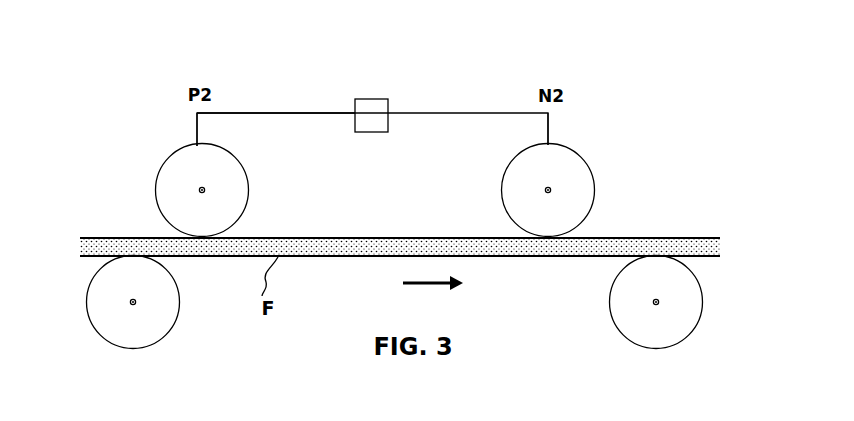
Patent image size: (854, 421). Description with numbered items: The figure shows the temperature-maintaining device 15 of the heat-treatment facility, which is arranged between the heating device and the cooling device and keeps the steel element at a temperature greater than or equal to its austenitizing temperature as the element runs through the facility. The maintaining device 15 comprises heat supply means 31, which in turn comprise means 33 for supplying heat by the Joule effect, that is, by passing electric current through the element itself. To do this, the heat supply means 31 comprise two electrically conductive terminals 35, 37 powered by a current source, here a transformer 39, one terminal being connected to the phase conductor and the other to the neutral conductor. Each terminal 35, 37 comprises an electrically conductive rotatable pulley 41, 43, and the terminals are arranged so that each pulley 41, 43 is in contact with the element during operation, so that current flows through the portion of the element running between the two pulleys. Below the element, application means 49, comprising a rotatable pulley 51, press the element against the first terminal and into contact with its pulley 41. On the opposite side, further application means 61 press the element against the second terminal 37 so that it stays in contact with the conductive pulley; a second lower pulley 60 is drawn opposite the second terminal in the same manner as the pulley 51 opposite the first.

The temperature-maintaining device 15 is at (428, 68).
The heat supply means 31 is at (210, 70).
The means for supplying heat by the Joule effect 33 is at (324, 92).
The electrically conductive terminal 35 is at (207, 174).
The electrically conductive terminal 37 is at (513, 139).
The transformer 39 is at (372, 132).
The electrically conductive rotatable pulley 41 is at (162, 180).
The electrically conductive rotatable pulley 43 is at (515, 222).
The application means 49 is at (114, 288).
The rotatable pulley 51 is at (118, 273).
The second backup roller unit 60 is at (637, 287).
The application means 61 is at (640, 270).